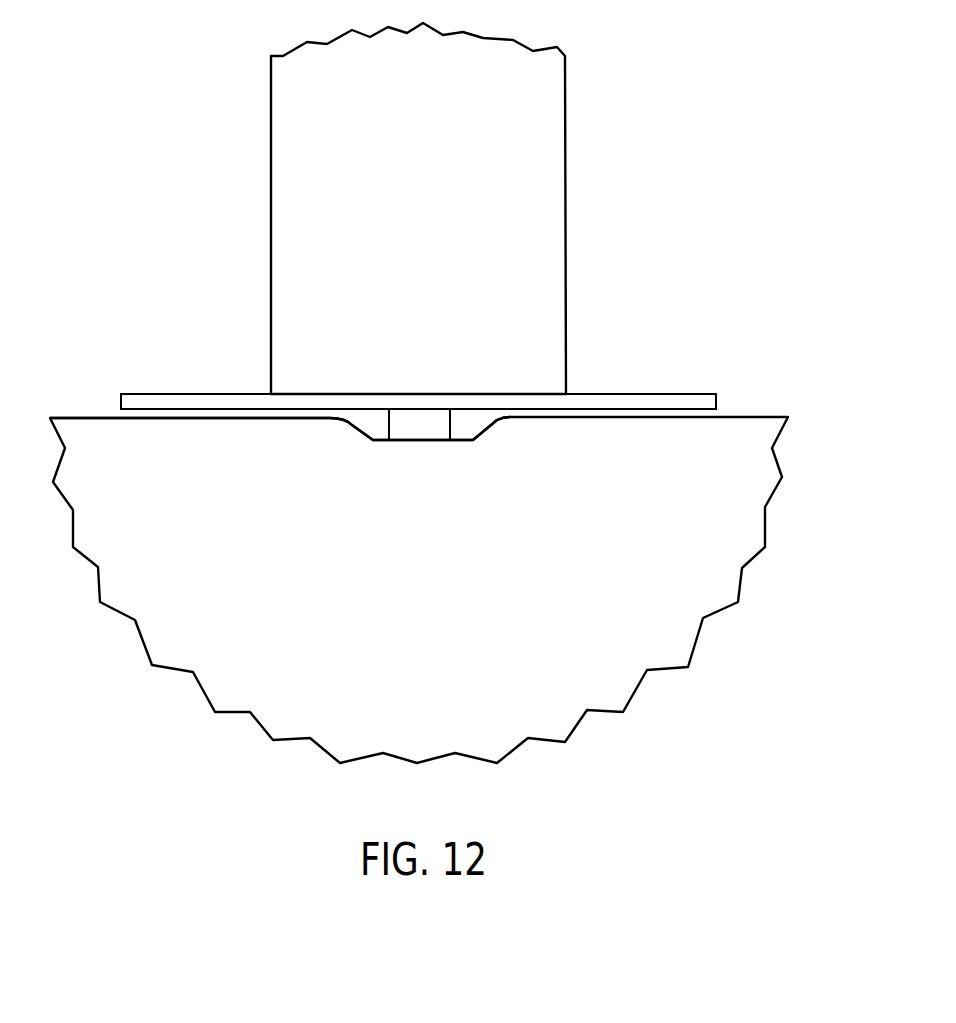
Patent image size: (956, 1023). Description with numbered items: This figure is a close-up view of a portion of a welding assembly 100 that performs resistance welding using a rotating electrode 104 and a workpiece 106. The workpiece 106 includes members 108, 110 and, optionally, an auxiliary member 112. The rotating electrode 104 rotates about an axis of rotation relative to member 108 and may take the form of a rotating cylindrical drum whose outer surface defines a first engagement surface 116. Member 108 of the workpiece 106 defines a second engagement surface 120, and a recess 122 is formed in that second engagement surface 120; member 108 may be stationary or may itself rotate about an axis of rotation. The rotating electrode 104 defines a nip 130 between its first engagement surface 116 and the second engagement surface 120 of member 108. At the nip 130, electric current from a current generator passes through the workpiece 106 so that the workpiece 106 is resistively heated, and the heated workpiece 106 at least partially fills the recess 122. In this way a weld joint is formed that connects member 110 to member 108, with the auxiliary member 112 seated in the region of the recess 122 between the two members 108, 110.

The welding assembly 100 is at (440, 393).
The rotating electrode 104 is at (568, 114).
The workpiece 106 is at (440, 524).
The member 108 is at (450, 561).
The member 110 is at (456, 376).
The auxiliary member 112 is at (450, 434).
The first engagement surface 116 is at (284, 397).
The second engagement surface 120 is at (85, 415).
The recess 122 is at (353, 434).
The nip 130 is at (582, 382).